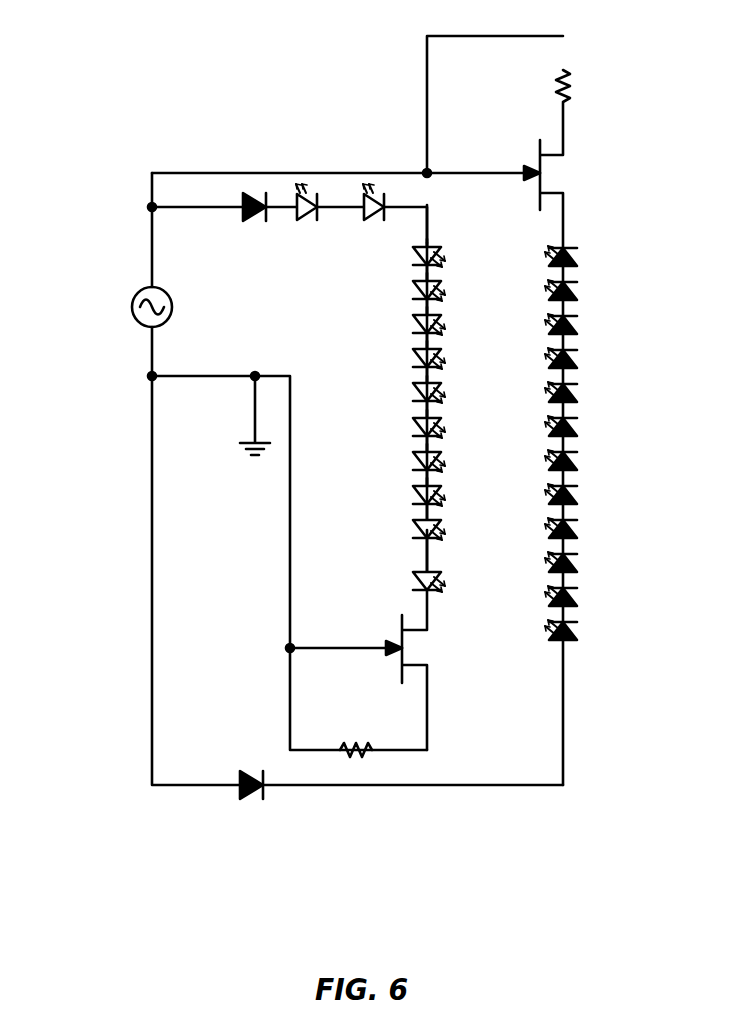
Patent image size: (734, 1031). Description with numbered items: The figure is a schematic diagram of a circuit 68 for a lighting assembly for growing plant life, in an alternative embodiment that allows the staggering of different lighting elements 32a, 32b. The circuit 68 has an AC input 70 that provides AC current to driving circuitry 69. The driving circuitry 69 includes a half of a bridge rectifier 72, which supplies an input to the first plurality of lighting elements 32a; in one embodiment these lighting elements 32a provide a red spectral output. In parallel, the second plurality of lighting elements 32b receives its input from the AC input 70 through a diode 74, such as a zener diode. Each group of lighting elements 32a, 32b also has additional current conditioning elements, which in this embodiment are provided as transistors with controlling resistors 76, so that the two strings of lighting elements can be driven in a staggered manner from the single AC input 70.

The circuit 68 is at (111, 118).
The driving circuitry 69 is at (251, 118).
The AC input 70 is at (131, 308).
The half of a bridge rectifier 72 is at (247, 234).
The diode 74 is at (235, 808).
The controlling resistor 76 is at (603, 80).
The first plurality of lighting elements 32a is at (400, 352).
The second plurality of lighting elements 32b is at (594, 392).